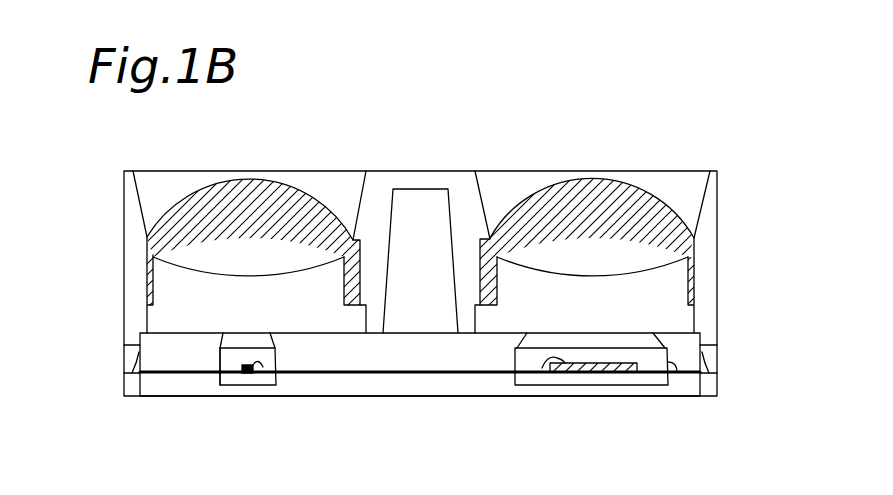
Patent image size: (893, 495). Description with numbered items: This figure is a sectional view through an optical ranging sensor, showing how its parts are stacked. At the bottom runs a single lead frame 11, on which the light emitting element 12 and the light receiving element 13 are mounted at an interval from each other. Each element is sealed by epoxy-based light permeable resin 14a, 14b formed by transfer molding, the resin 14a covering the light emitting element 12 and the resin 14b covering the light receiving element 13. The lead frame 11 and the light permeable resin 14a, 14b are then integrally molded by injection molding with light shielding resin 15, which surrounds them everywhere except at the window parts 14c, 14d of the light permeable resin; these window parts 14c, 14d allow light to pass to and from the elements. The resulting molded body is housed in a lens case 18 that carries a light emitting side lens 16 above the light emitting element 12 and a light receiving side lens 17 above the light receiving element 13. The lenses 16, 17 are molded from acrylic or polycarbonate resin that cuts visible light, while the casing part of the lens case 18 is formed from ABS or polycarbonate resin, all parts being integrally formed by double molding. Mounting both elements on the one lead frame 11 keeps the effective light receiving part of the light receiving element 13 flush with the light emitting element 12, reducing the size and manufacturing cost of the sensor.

The lead frame 11 is at (347, 374).
The light emitting element 12 is at (262, 368).
The light receiving element 13 is at (543, 367).
The light permeable resin 14a is at (220, 357).
The light permeable resin 14b is at (677, 373).
The window part 14c is at (245, 348).
The window part 14d is at (598, 350).
The light shielding resin 15 is at (431, 396).
The light emitting side lens 16 is at (293, 187).
The light receiving side lens 17 is at (548, 187).
The lens case 18 is at (408, 168).